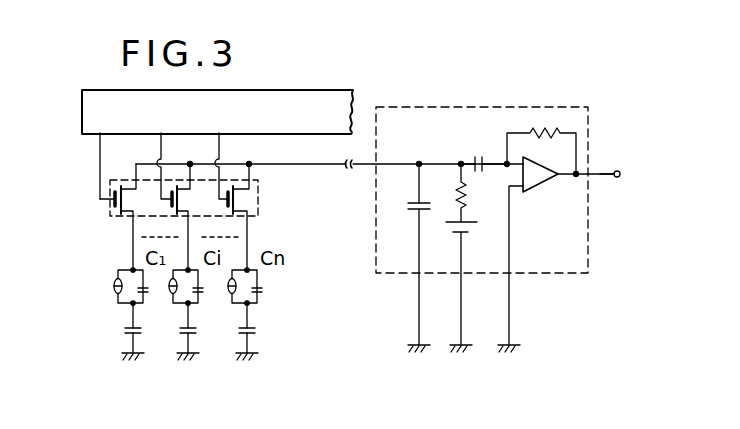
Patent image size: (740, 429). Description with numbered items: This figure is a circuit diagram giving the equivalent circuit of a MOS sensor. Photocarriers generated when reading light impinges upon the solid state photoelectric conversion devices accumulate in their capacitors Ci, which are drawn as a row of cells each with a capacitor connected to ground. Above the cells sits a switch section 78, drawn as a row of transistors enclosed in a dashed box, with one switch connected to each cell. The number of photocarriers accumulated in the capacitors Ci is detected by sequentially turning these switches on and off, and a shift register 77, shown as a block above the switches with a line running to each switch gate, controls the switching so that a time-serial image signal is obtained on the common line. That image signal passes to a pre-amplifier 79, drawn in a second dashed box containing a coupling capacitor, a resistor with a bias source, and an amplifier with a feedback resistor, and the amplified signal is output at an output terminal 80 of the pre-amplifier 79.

The shift register 77 is at (90, 133).
The switch section 78 is at (108, 210).
The pre-amplifier 79 is at (546, 274).
The output terminal 80 is at (620, 174).